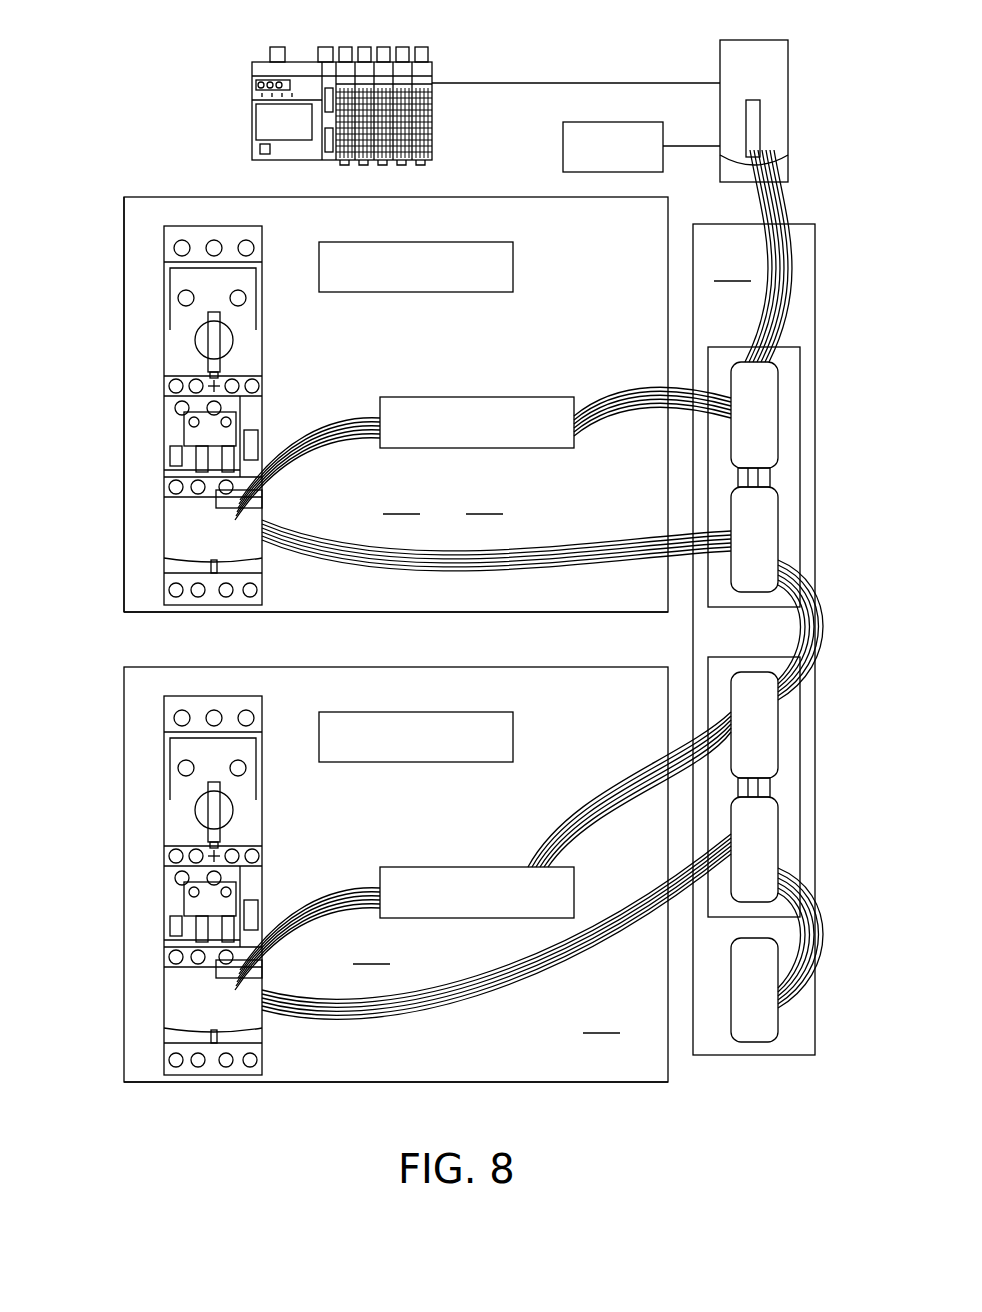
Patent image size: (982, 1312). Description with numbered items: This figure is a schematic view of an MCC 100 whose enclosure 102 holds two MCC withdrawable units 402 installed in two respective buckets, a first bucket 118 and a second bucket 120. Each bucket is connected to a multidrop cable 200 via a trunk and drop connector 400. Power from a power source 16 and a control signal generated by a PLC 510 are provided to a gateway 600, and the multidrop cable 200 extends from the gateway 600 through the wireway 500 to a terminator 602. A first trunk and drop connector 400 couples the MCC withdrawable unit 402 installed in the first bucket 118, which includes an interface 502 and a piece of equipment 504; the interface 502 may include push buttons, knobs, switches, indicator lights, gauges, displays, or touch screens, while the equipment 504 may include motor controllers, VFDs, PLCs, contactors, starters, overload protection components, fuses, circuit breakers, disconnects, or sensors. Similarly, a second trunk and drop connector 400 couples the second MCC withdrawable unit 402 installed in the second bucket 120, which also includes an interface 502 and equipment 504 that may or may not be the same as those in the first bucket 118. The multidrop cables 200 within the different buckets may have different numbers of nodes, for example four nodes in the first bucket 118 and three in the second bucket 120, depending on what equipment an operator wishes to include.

The power source 16 is at (563, 145).
The MCC 100 is at (195, 197).
The enclosure 102 is at (124, 410).
The first bucket 118 is at (416, 379).
The second bucket 120 is at (416, 839).
The multidrop cable 200 is at (606, 421).
The trunk and drop connector 400 is at (800, 470).
The MCC withdrawable unit 402 is at (396, 787).
The wireway 500 is at (754, 639).
The interface 502 is at (476, 397).
The equipment 504 is at (262, 356).
The PLC 510 is at (252, 105).
The gateway 600 is at (788, 112).
The terminator 602 is at (788, 1010).